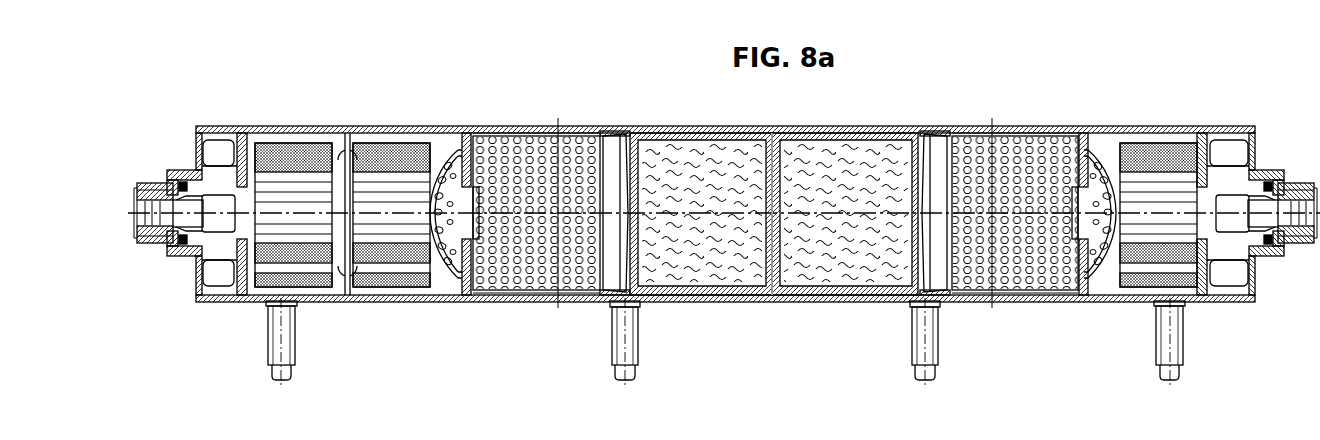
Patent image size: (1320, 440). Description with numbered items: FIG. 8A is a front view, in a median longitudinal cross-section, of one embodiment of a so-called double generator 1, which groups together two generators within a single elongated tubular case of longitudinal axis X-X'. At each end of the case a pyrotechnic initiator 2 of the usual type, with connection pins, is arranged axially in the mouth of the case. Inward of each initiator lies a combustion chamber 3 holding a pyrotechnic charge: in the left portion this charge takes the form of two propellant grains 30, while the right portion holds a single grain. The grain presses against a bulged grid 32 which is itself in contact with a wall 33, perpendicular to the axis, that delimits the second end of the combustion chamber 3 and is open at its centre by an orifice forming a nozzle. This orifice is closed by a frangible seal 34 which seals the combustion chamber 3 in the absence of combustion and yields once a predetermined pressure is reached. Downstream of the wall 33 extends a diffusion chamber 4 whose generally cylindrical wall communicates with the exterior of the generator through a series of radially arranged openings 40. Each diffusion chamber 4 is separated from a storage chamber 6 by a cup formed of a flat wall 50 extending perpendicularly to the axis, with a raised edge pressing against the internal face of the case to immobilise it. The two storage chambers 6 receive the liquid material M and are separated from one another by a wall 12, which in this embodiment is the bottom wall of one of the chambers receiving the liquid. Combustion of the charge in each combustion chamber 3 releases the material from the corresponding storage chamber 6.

The generator 1 is at (453, 83).
The pyrotechnic initiator 2 is at (222, 202).
The combustion chamber 3 is at (364, 116).
The diffusion chamber 4 is at (533, 298).
The storage chamber 6 is at (710, 163).
The wall 12 is at (778, 263).
The monolithic grains 30 is at (311, 294).
The bulged grid 32 is at (440, 273).
The wall 33 is at (466, 296).
The frangible seal 34 is at (469, 207).
The openings 40 is at (558, 122).
The flat wall 50 is at (638, 301).